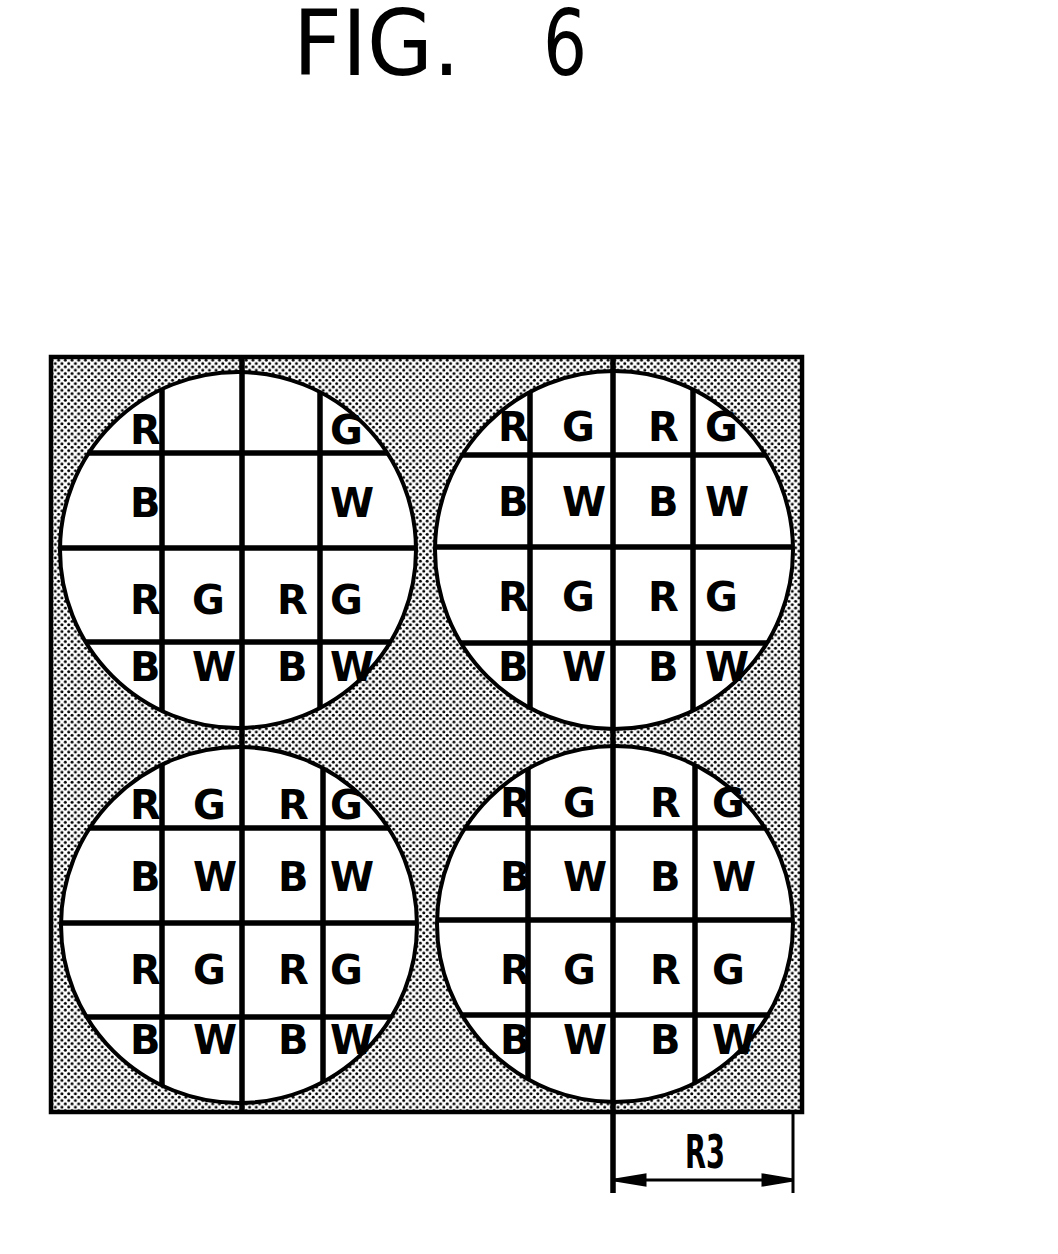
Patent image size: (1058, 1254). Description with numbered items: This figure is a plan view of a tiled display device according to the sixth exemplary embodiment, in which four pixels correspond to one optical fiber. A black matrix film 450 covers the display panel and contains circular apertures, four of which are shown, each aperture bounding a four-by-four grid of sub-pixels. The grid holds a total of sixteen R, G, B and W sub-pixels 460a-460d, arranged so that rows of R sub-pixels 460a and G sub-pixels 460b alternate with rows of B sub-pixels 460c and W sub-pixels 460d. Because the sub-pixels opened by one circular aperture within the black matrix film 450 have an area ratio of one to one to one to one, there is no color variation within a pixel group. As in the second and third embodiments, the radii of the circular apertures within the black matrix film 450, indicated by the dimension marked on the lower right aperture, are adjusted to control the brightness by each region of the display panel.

The black matrix film 450 is at (765, 703).
The R sub-pixel 460a is at (272, 397).
The G sub-pixel 460b is at (177, 397).
The B sub-pixel 460c is at (314, 497).
The W sub-pixel 460d is at (160, 482).